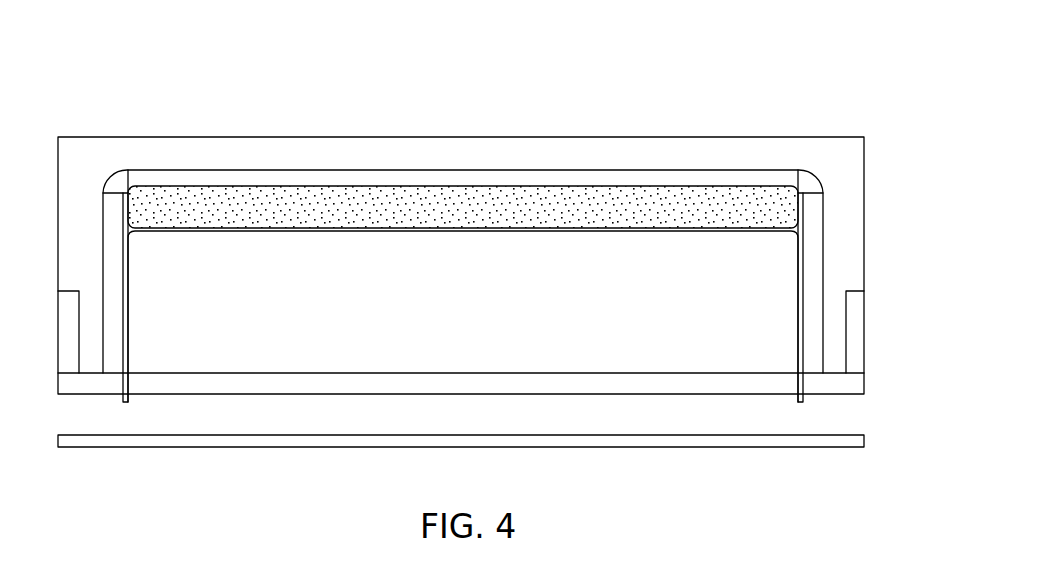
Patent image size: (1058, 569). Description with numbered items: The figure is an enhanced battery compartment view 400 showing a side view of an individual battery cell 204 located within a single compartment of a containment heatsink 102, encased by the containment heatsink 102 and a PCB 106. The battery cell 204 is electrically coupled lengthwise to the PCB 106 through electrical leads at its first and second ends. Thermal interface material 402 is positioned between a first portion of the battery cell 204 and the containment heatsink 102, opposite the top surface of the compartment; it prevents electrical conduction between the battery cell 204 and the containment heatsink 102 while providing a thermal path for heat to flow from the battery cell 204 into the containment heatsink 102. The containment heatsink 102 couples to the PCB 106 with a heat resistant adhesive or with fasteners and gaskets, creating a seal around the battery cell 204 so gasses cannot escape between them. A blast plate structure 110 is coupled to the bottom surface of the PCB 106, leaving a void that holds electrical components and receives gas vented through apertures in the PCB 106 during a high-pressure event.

The containment heatsink 102 is at (327, 152).
The thermal interface material 402 is at (558, 212).
The battery cell 204 is at (767, 262).
The PCB 106 is at (212, 355).
The blast plate structure 110 is at (312, 442).
The enhanced battery compartment view 400 is at (802, 95).